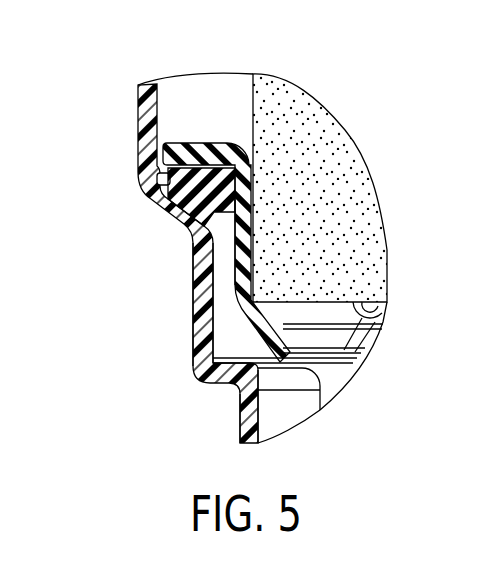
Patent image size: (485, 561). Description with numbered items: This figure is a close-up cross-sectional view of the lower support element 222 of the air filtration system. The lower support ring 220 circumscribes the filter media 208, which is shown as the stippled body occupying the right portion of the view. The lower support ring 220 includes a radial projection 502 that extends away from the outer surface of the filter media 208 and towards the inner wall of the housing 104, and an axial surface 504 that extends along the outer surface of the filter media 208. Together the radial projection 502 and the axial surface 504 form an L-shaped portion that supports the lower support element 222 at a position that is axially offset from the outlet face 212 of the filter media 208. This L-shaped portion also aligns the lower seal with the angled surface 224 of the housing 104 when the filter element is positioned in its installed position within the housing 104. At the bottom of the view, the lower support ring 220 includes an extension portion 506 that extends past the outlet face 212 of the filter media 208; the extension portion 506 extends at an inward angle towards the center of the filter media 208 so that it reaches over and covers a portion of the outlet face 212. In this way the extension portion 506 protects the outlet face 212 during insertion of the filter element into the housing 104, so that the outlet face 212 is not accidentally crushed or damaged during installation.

The housing 104 is at (150, 99).
The radial projection 502 is at (189, 150).
The lower support element 222 is at (166, 176).
The angled surface 224 is at (155, 197).
The lower support ring 220 is at (224, 246).
The axial surface 504 is at (236, 274).
The extension portion 506 is at (234, 328).
The filter media 208 is at (348, 165).
The outlet face 212 is at (327, 300).